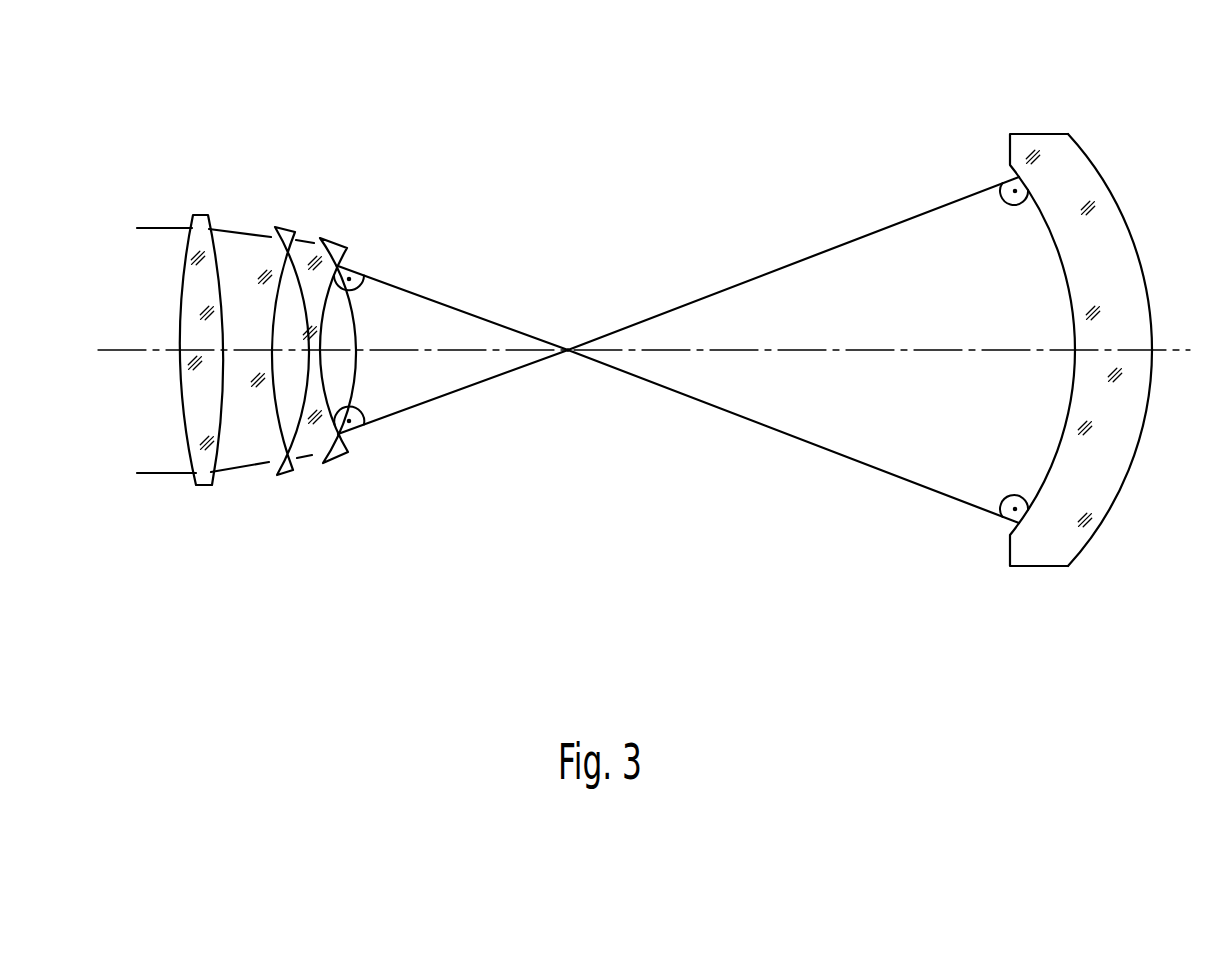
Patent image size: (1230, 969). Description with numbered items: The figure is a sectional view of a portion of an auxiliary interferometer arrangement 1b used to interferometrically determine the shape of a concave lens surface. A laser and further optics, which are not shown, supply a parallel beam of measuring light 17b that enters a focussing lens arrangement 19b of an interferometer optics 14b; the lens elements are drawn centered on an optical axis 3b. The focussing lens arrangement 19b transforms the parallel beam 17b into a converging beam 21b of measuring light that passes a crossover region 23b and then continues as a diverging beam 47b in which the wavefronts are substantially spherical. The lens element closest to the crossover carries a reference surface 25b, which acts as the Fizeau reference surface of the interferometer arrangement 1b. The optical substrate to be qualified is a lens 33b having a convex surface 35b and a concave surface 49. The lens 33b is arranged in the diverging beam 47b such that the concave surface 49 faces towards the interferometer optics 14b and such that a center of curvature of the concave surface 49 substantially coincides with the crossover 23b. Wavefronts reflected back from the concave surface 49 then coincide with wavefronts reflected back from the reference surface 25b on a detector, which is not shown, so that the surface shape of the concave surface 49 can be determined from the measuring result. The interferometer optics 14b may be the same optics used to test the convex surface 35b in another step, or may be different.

The interferometer arrangement 1b is at (541, 152).
The optical axis 3b is at (1175, 348).
The interferometer optics 14b is at (243, 153).
The parallel beam of measuring light 17b is at (165, 475).
The focussing lens arrangement 19b is at (357, 503).
The converging beam of measuring light 21b is at (443, 300).
The crossover region 23b is at (567, 352).
The reference surface 25b is at (296, 233).
The lens 33b is at (1038, 568).
The convex surface 35b is at (1088, 547).
The diverging beam of measuring light 47b is at (778, 268).
The concave surface 49 is at (1008, 533).